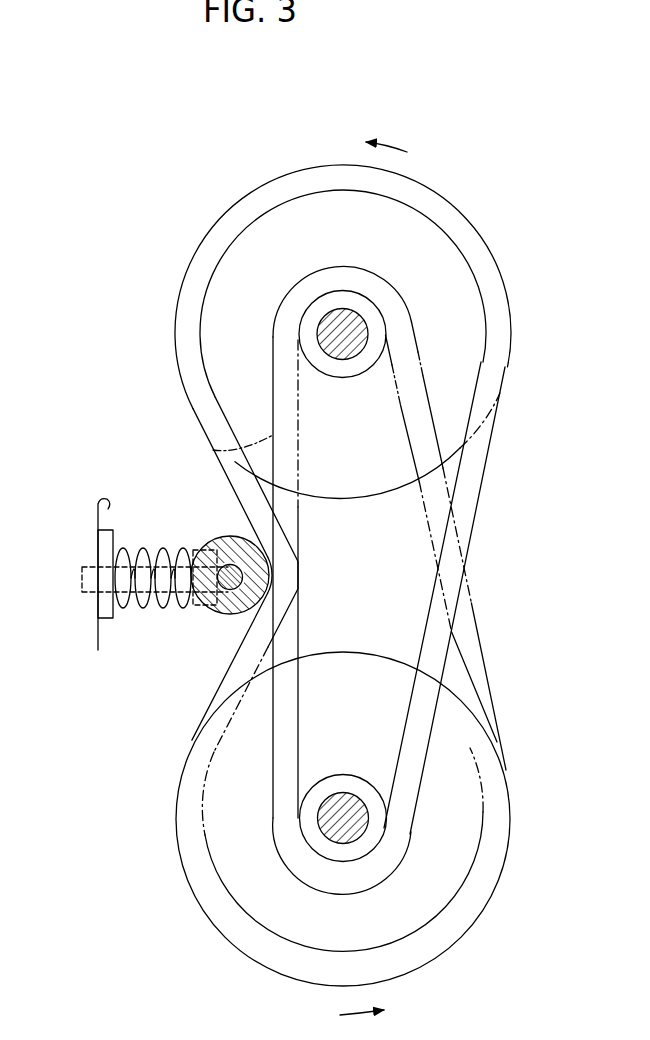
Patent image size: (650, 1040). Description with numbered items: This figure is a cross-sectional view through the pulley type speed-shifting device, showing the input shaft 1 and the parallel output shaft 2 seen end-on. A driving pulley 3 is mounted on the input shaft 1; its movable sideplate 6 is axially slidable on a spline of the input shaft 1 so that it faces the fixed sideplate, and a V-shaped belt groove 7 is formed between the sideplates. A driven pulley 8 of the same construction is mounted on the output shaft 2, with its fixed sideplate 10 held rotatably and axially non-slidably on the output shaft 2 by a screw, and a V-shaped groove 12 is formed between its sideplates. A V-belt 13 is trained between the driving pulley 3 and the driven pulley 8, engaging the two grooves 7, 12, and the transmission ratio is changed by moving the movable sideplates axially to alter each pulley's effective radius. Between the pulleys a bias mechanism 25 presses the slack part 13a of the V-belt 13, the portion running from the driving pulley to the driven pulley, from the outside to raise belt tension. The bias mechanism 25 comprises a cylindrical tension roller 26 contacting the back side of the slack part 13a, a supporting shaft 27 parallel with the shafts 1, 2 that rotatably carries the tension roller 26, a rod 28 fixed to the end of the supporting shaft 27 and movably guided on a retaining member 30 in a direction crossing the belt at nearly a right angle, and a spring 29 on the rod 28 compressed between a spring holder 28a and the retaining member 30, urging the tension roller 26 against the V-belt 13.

The input shaft 1 is at (320, 317).
The output shaft 2 is at (357, 843).
The driving pulley 3 is at (175, 295).
The movable sideplate 6 is at (477, 233).
The V-shaped belt groove 7 is at (326, 205).
The driven pulley 8 is at (338, 819).
The fixed sideplate 10 is at (493, 743).
The V-shaped groove 12 is at (473, 840).
The V-belt 13 is at (450, 507).
The slack part 13a is at (227, 477).
The bias mechanism 25 is at (154, 576).
The tension roller 26 is at (209, 538).
The supporting shaft 27 is at (235, 598).
The rod 28 is at (130, 603).
The spring holder 28a is at (206, 622).
The spring 29 is at (158, 607).
The retaining member 30 is at (107, 500).